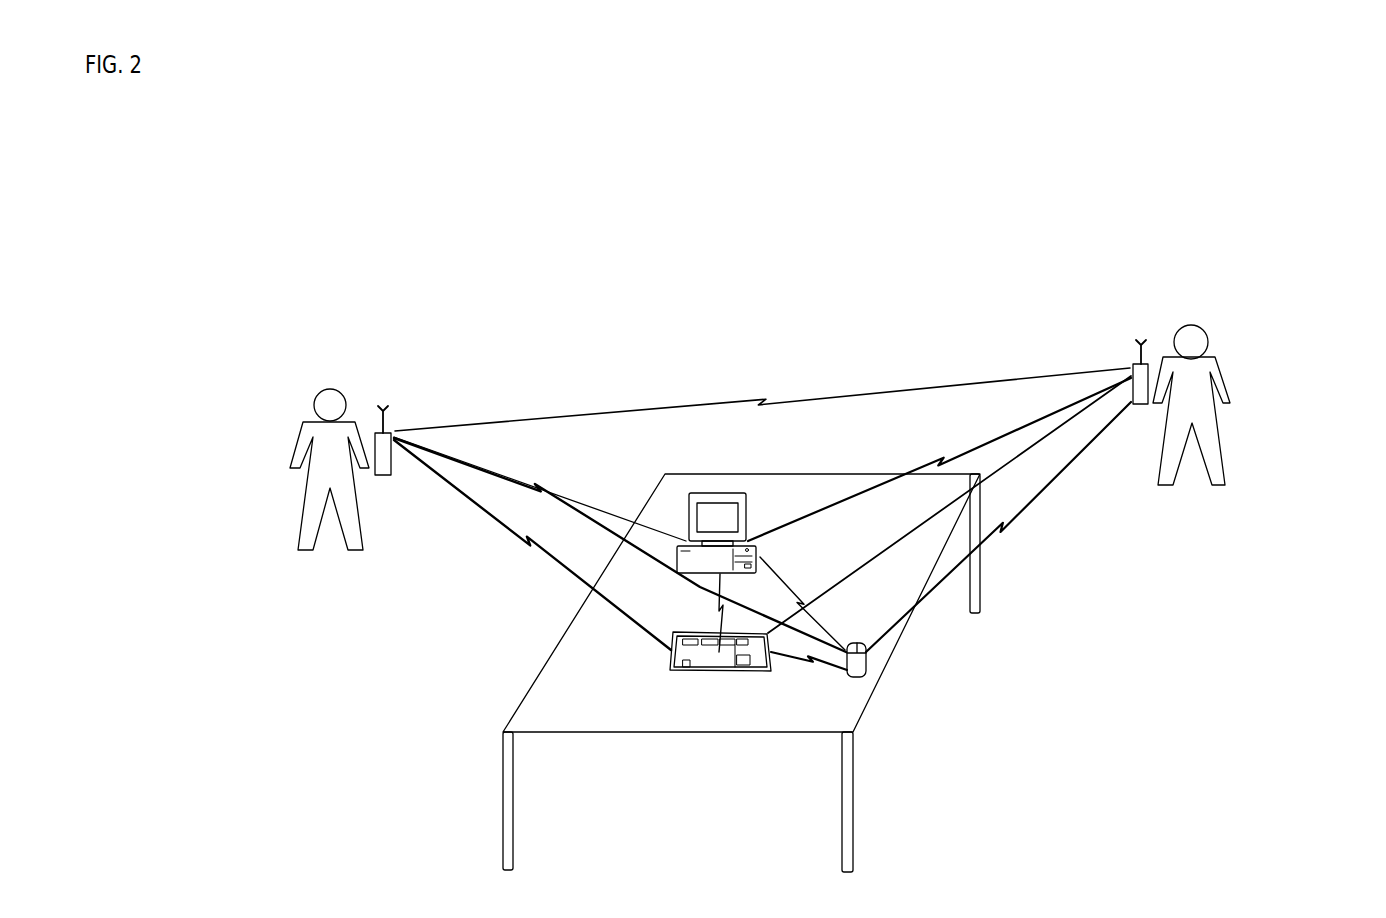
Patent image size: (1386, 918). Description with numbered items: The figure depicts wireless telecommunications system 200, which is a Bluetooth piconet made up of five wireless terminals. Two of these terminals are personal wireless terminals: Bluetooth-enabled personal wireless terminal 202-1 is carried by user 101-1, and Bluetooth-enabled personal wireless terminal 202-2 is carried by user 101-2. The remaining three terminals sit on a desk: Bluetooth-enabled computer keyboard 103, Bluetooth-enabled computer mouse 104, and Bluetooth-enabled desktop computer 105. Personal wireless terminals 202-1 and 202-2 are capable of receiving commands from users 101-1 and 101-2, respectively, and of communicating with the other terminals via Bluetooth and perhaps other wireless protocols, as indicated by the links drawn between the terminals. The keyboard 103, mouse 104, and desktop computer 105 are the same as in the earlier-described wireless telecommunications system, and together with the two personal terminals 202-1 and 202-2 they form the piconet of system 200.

The wireless telecommunications system 200 is at (918, 212).
The user 101-1 is at (306, 500).
The user 101-2 is at (1215, 435).
The Bluetooth-enabled personal wireless terminal 202-1 is at (385, 475).
The Bluetooth-enabled personal wireless terminal 202-2 is at (1142, 405).
The Bluetooth-enabled computer keyboard 103 is at (688, 662).
The Bluetooth-enabled computer mouse 104 is at (858, 677).
The Bluetooth-enabled desktop computer 105 is at (700, 492).